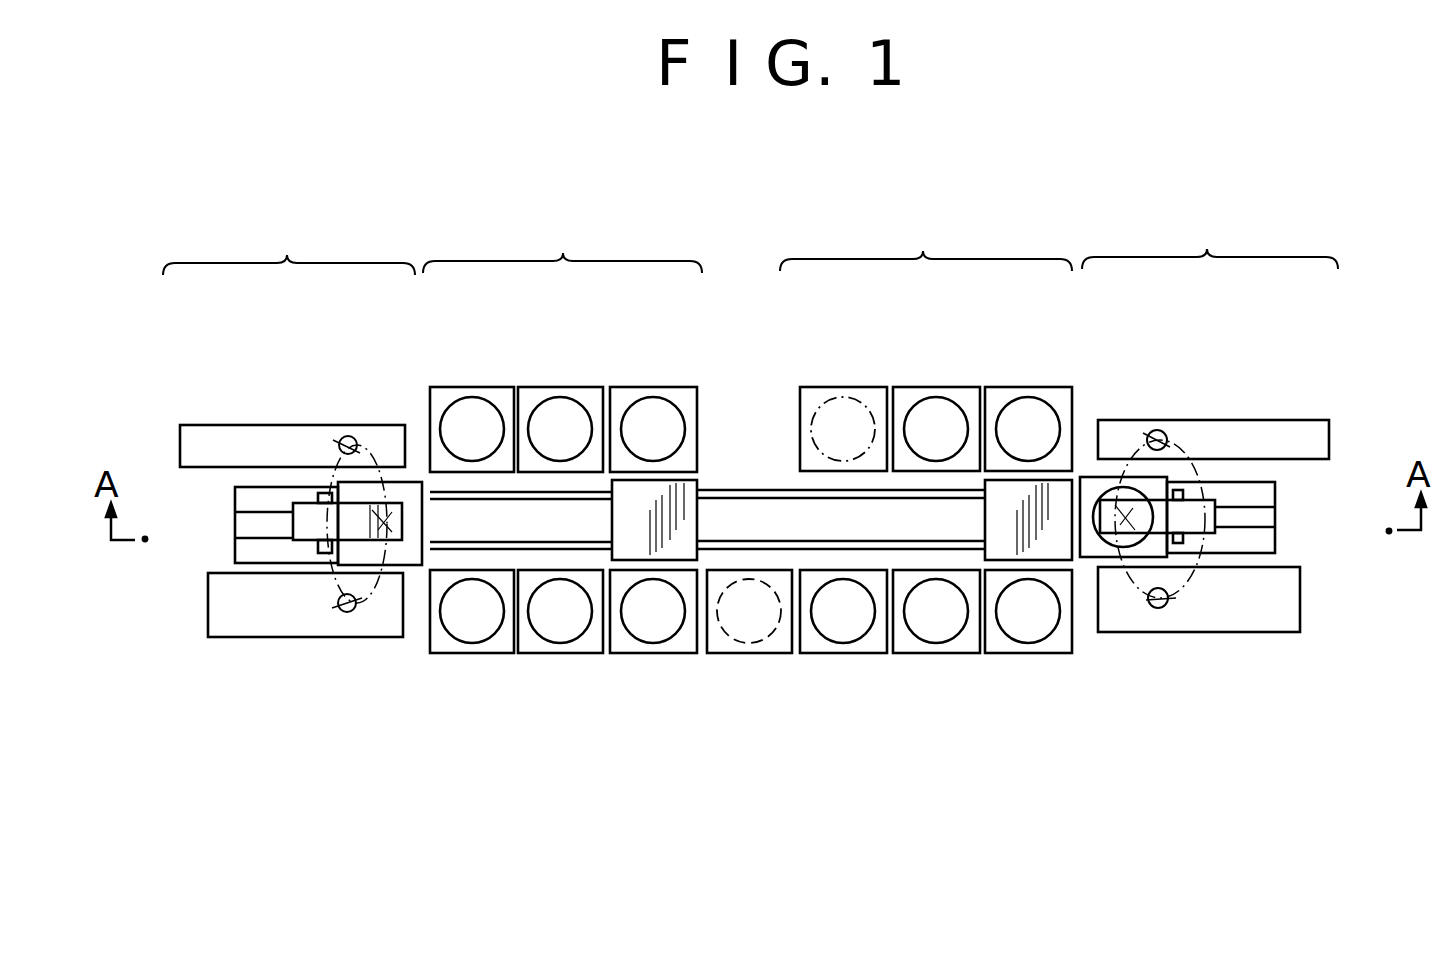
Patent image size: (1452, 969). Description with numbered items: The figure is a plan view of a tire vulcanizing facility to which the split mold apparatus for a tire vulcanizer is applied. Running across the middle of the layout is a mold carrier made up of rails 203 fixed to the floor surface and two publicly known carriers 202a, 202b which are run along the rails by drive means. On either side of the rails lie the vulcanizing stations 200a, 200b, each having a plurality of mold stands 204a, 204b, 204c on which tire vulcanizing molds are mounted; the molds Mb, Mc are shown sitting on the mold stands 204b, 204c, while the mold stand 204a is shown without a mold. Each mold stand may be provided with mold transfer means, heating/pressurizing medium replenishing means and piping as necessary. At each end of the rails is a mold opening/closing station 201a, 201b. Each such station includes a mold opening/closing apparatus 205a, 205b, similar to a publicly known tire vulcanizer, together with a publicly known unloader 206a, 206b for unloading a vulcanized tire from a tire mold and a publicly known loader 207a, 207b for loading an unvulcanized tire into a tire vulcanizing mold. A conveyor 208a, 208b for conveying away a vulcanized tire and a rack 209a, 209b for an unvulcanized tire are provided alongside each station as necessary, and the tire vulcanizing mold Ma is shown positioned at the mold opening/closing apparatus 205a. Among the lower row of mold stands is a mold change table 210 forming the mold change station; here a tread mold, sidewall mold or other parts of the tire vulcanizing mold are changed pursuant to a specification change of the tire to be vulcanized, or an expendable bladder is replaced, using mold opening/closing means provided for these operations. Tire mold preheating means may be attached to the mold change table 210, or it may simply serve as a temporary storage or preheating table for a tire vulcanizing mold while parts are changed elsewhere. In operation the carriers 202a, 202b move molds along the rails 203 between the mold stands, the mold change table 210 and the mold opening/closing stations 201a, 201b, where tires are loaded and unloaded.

The vulcanizing station 200a is at (926, 240).
The vulcanizing station 200b is at (562, 242).
The mold opening/closing station 201a is at (1210, 238).
The mold opening/closing station 201b is at (289, 244).
The carrier 202a is at (985, 522).
The carrier 202b is at (612, 525).
The rails 203 is at (815, 500).
The mold stand 204a is at (822, 398).
The mold stand 204b is at (905, 385).
The mold stand 204c is at (1015, 385).
The tire vulcanizing mold Ma is at (1118, 485).
The tire vulcanizing mold Mb is at (945, 402).
The tire vulcanizing mold Mc is at (1048, 402).
The mold opening/closing apparatus 205a is at (1213, 515).
The mold opening/closing apparatus 205b is at (303, 522).
The unloader 206a is at (1167, 470).
The unloader 206b is at (330, 440).
The loader 207a is at (1165, 612).
The loader 207b is at (330, 600).
The conveyor 208a is at (1323, 430).
The conveyor 208b is at (205, 432).
The rack 209a is at (1290, 628).
The rack 209b is at (243, 628).
The mold change table 210 is at (752, 653).